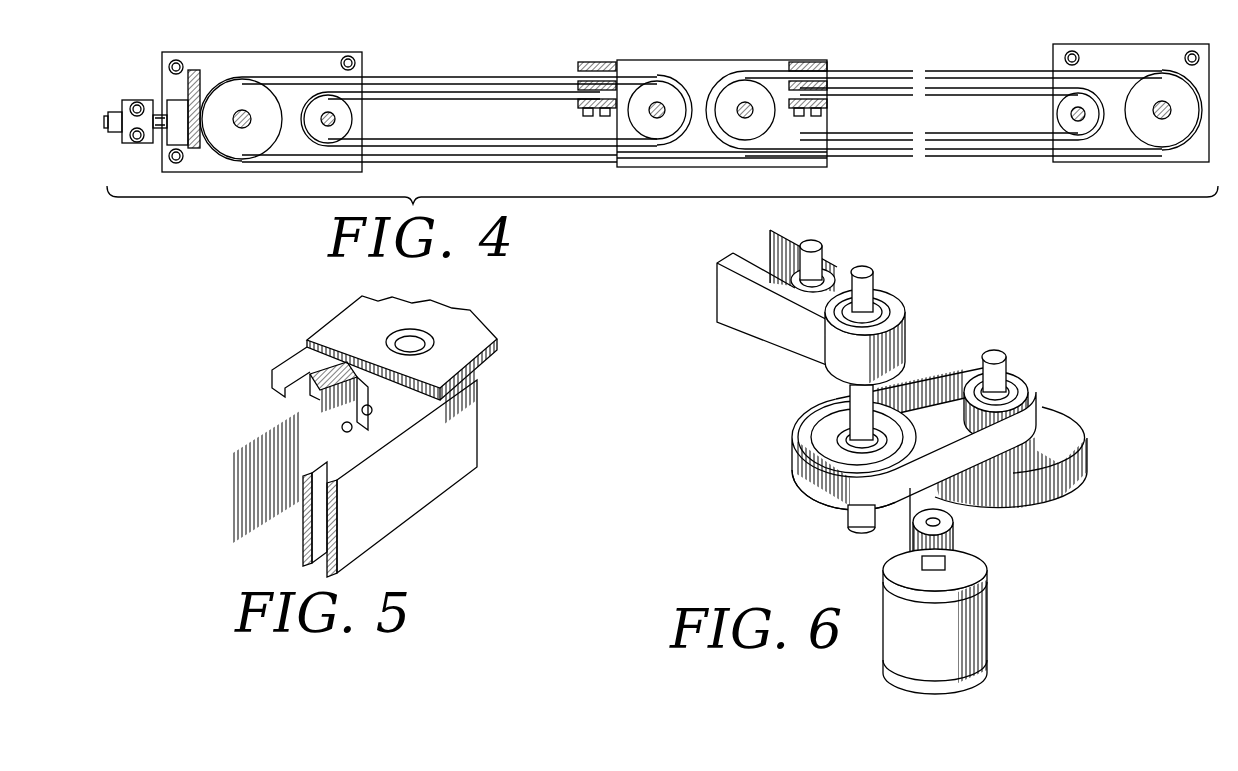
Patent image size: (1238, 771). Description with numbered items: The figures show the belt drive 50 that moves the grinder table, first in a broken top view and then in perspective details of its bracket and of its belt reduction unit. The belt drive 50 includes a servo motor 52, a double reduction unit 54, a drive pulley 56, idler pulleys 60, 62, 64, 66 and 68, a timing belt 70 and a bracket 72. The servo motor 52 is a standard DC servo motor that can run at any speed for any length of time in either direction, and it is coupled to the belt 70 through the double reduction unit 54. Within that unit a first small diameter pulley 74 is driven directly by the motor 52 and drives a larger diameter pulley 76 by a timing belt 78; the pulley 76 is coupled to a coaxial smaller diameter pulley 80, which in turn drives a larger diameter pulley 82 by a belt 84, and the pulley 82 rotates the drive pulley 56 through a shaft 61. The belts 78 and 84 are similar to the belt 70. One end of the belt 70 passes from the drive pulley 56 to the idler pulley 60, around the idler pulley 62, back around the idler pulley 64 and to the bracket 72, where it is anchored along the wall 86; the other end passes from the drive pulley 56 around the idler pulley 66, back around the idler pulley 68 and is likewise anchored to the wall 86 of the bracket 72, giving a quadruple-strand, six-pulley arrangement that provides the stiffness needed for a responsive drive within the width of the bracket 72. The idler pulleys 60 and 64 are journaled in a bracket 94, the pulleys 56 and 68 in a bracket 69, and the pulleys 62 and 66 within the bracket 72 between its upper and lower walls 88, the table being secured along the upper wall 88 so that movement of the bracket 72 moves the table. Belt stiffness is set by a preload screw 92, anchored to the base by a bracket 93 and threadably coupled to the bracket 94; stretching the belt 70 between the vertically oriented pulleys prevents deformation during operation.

In FIG. 4, the belt drive 50 is at (858, 57).
In FIG. 6, the servo motor 52 is at (975, 622).
In FIG. 6, the double reduction unit 54 is at (942, 343).
In FIG. 4, the drive pulley 56 is at (1162, 135).
In FIG. 6, the drive pulley 56 is at (893, 300).
In FIG. 4, the idler pulley 60 is at (244, 147).
In FIG. 6, the shaft 61 is at (848, 400).
In FIG. 4, the idler pulley 62 is at (658, 90).
In FIG. 4, the idler pulley 64 is at (352, 119).
In FIG. 4, the idler pulley 66 is at (750, 90).
In FIG. 4, the idler pulley 68 is at (1068, 113).
In FIG. 4, the bracket 69 is at (1115, 55).
In FIG. 4, the timing belt 70 is at (975, 162).
In FIG. 5, the timing belt 70 is at (400, 500).
In FIG. 4, the bracket 72 is at (735, 168).
In FIG. 5, the bracket 72 is at (343, 325).
In FIG. 6, the first small diameter pulley 74 is at (893, 558).
In FIG. 6, the larger diameter pulley 76 is at (1060, 420).
In FIG. 6, the timing belt 78 is at (929, 440).
In FIG. 6, the smaller diameter pulley 80 is at (1010, 375).
In FIG. 6, the larger diameter pulley 82 is at (825, 440).
In FIG. 6, the belt 84 is at (823, 487).
In FIG. 4, the wall 86 is at (580, 97).
In FIG. 5, the wall 86 is at (297, 400).
In FIG. 5, the upper and lower walls 88 is at (475, 348).
In FIG. 4, the preload screw 92 is at (163, 138).
In FIG. 4, the bracket 93 is at (141, 99).
In FIG. 4, the bracket 94 is at (247, 52).